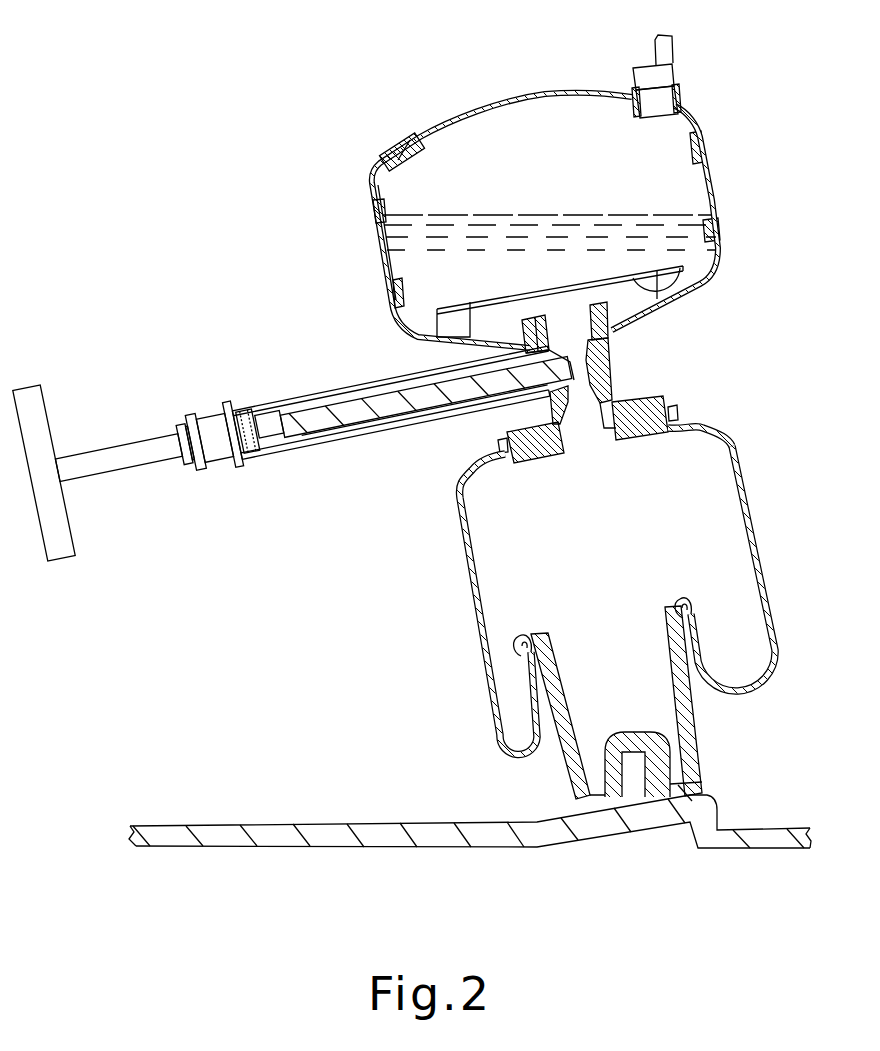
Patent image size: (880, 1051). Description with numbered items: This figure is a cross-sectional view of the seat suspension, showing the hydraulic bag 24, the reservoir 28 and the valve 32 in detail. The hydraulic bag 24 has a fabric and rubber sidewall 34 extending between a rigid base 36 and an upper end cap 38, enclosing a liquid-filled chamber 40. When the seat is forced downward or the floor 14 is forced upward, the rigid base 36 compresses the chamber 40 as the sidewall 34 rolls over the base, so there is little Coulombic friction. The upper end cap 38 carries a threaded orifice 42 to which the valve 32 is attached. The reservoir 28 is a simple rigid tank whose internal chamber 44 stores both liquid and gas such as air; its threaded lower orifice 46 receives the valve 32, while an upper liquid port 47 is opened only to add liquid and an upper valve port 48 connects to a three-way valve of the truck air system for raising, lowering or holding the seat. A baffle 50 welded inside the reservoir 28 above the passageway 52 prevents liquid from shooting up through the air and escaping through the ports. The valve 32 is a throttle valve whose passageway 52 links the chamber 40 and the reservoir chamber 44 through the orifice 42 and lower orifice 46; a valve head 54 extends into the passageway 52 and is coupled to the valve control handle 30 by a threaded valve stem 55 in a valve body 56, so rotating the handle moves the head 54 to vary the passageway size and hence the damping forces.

The floor 14 is at (283, 825).
The hydraulic bag 24 is at (463, 560).
The reservoir 28 is at (602, 191).
The valve control handle 30 is at (55, 447).
The valve 32 is at (372, 449).
The sidewall 34 is at (743, 559).
The rigid base 36 is at (700, 718).
The upper end cap 38 is at (627, 407).
The chamber 40 is at (702, 468).
The threaded orifice 42 is at (593, 437).
The internal chamber 44 is at (555, 130).
The threaded lower orifice 46 is at (583, 298).
The upper liquid port 47 is at (391, 150).
The upper valve port 48 is at (678, 71).
The baffle 50 is at (673, 303).
The passageway 52 is at (633, 395).
The valve head 54 is at (570, 355).
The threaded valve stem 55 is at (267, 418).
The valve body 56 is at (407, 432).